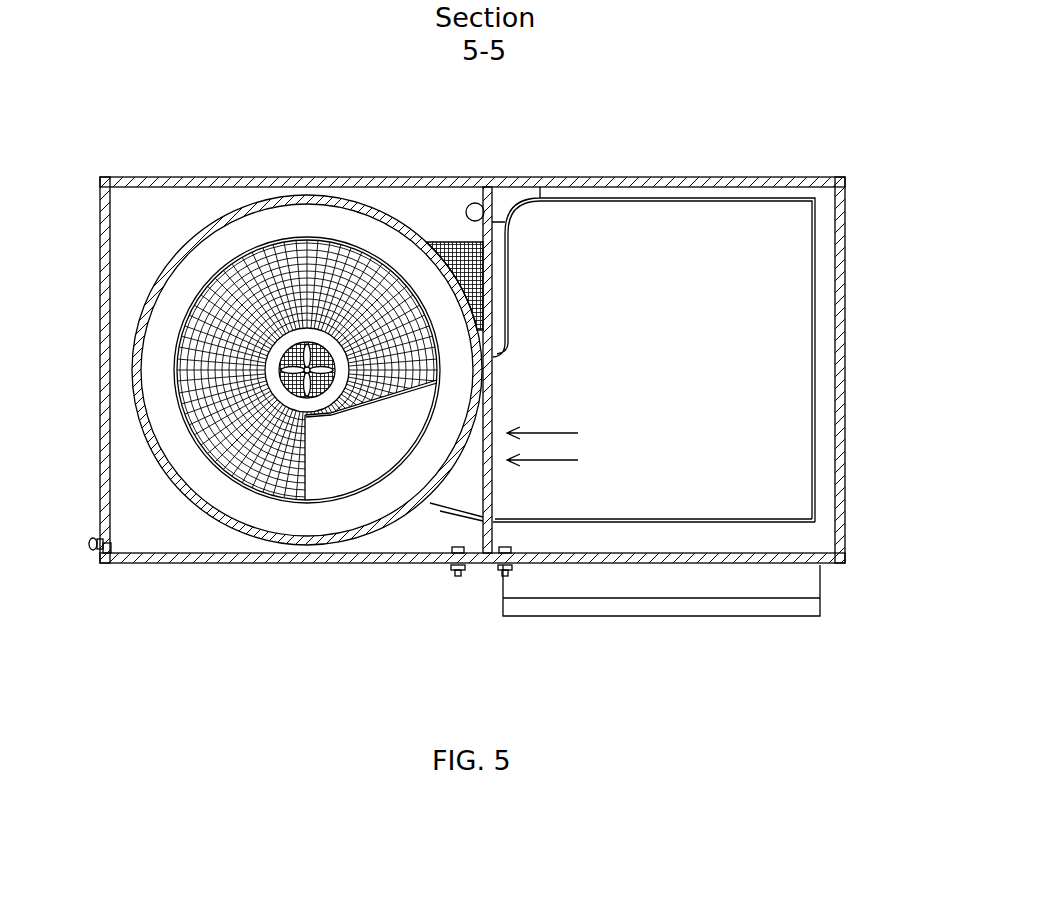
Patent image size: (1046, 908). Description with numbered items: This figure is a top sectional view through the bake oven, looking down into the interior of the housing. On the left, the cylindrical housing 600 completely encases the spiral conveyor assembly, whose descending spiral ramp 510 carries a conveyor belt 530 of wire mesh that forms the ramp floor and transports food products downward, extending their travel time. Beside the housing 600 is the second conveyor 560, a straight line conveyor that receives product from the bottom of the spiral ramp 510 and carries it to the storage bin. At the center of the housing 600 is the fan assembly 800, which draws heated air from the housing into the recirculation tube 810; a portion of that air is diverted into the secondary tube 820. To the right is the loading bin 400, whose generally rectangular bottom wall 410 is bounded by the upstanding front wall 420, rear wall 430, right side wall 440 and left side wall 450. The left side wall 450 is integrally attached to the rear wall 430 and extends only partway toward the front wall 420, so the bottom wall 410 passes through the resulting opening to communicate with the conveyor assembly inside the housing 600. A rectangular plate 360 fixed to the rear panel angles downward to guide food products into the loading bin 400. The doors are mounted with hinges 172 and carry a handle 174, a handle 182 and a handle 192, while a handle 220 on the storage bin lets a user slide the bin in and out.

The hinges 172 is at (100, 176).
The handle 174 is at (91, 553).
The handle 182 is at (455, 578).
The handle 192 is at (512, 573).
The handle 220 is at (587, 608).
The rectangular plate 360 is at (747, 193).
The loading bin 400 is at (822, 405).
The bottom wall 410 is at (609, 411).
The front wall 420 is at (743, 525).
The rear wall 430 is at (682, 200).
The right side wall 440 is at (817, 463).
The left side wall 450 is at (500, 352).
The descending spiral ramp 510 is at (197, 300).
The conveyor belt 530 is at (316, 262).
The second conveyor 560 is at (437, 243).
The cylindrical housing 600 is at (240, 200).
The fan assembly 800 is at (308, 392).
The recirculation tube 810 is at (471, 204).
The secondary tube 820 is at (502, 208).